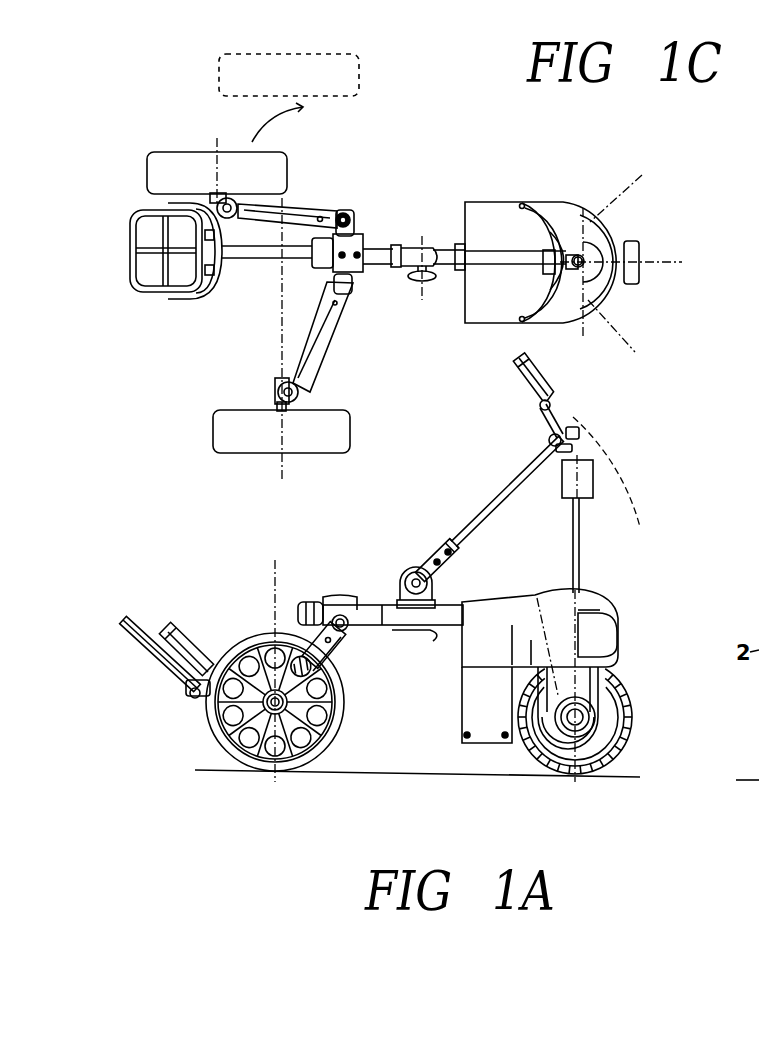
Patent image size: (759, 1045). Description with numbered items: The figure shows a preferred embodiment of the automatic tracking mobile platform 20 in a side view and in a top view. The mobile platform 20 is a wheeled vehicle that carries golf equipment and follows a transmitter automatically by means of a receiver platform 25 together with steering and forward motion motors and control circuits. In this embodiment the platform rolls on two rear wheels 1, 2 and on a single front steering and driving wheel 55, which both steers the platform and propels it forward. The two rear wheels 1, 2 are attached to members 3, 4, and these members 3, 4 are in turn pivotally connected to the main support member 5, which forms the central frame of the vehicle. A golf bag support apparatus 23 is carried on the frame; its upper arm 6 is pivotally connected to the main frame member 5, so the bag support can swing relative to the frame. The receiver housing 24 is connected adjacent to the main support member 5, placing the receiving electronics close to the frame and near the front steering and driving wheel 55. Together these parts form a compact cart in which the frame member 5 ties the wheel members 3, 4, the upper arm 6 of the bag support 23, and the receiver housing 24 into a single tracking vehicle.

In FIG. 1C, the rear wheel 1 is at (217, 163).
In FIG. 1C, the rear wheel 2 is at (238, 425).
In FIG. 1A, the rear wheel 2 is at (340, 697).
In FIG. 1C, the member 3 is at (315, 211).
In FIG. 1A, the member 4 is at (346, 647).
In FIG. 1C, the main support member 5 is at (375, 252).
In FIG. 1A, the main support member 5 is at (400, 617).
In FIG. 1A, the upper arm 6 is at (500, 500).
In FIG. 1C, the automatic tracking mobile platform 20 is at (432, 249).
In FIG. 1A, the automatic tracking mobile platform 20 is at (436, 586).
In FIG. 1C, the golf bag support apparatus 23 is at (150, 287).
In FIG. 1A, the golf bag support apparatus 23 is at (162, 668).
In FIG. 1C, the receiver housing 24 is at (567, 212).
In FIG. 1A, the receiver housing 24 is at (597, 603).
In FIG. 1C, the receiver platform 25 is at (595, 261).
In FIG. 1A, the receiver platform 25 is at (588, 473).
In FIG. 1A, the front steering and driving wheel 55 is at (632, 705).